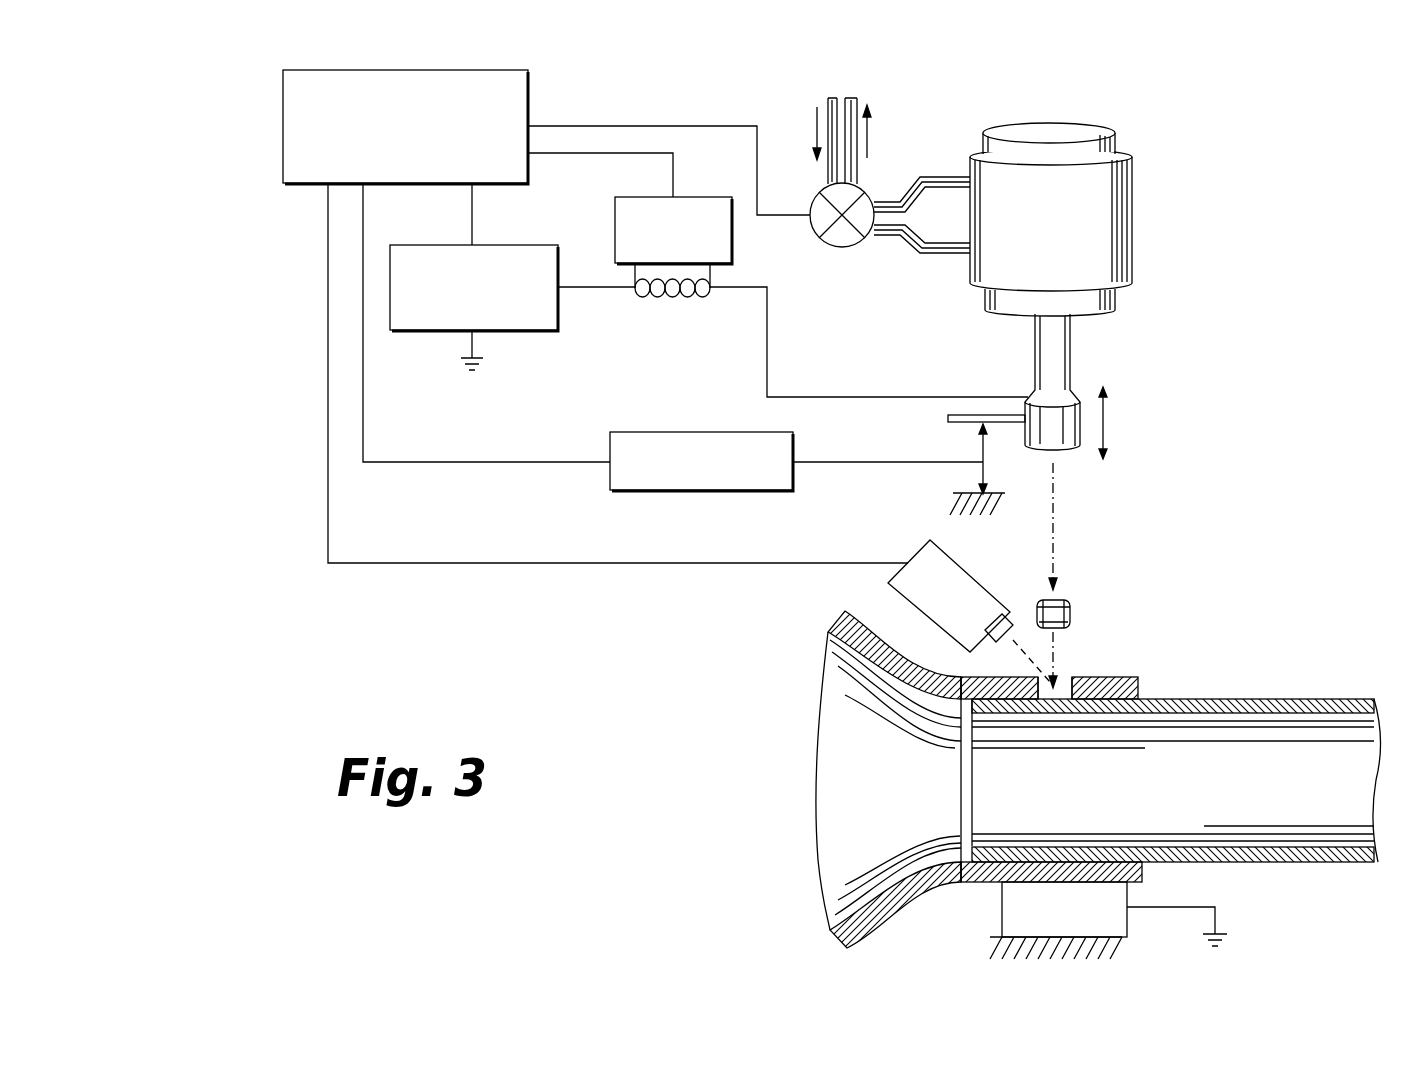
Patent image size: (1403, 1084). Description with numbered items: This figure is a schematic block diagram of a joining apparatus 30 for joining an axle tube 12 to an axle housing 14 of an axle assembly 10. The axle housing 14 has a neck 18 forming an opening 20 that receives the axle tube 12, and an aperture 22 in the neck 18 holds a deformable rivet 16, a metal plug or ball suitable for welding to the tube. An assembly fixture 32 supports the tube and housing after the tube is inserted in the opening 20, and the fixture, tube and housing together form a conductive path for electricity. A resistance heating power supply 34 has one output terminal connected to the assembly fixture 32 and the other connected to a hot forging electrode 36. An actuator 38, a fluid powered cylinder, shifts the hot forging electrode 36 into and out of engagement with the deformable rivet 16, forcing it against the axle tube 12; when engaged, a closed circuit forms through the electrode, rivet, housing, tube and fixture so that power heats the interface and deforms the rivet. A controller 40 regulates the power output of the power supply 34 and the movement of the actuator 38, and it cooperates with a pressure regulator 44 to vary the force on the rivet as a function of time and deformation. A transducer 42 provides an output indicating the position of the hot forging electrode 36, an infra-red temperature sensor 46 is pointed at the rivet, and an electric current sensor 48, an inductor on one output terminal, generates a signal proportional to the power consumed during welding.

The axle assembly 10 is at (1065, 765).
The axle tube 12 is at (1322, 698).
The axle housing 14 is at (877, 658).
The deformable rivet 16 is at (1070, 608).
The neck 18 is at (1133, 679).
The opening 20 is at (1163, 778).
The aperture 22 is at (1072, 678).
The joining apparatus 30 is at (1105, 342).
The assembly fixture 32 is at (1002, 932).
The resistance heating power supply 34 is at (390, 280).
The hot forging electrode 36 is at (1067, 447).
The actuator 38 is at (1103, 205).
The controller 40 is at (283, 102).
The transducer 42 is at (610, 475).
The pressure regulator 44 is at (860, 196).
The infra-red temperature sensor 46 is at (912, 557).
The electric current sensor 48 is at (615, 239).